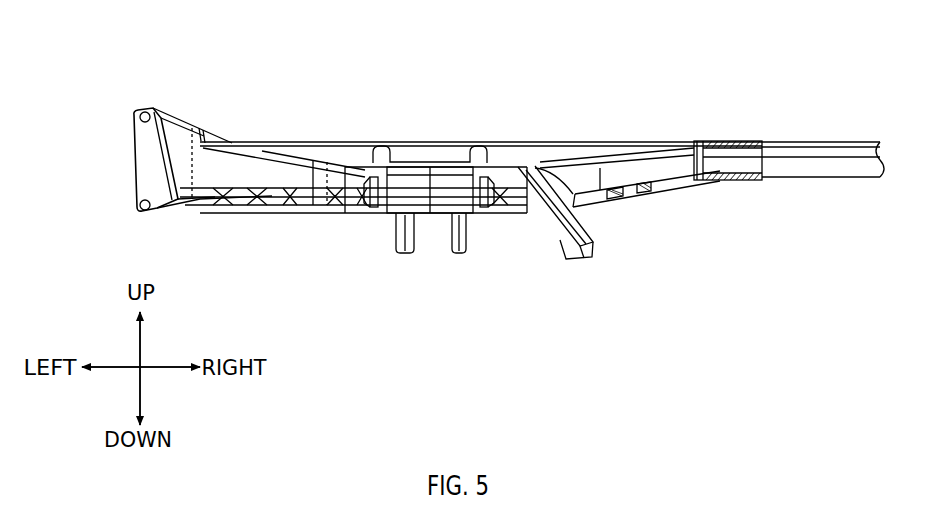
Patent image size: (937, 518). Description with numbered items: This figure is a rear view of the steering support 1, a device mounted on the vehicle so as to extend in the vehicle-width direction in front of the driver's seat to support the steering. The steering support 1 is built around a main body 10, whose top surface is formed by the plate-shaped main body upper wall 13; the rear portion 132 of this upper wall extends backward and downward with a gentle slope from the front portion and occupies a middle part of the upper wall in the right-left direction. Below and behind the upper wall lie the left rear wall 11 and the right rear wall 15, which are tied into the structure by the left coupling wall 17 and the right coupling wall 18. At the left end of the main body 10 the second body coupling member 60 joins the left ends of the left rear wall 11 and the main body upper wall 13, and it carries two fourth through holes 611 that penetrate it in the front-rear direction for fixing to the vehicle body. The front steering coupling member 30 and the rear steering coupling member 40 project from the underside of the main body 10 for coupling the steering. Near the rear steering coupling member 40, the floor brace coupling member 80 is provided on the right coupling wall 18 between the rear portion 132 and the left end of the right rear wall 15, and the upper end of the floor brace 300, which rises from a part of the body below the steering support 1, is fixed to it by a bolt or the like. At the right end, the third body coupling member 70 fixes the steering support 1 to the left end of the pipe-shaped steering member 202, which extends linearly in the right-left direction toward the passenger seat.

The steering support 1 is at (514, 41).
The main body 10 is at (591, 120).
The left rear wall 11 is at (227, 173).
The main body upper wall 13 is at (524, 146).
The rear portion 132 is at (446, 140).
The right rear wall 15 is at (673, 168).
The left coupling wall 17 is at (303, 153).
The right coupling wall 18 is at (597, 150).
The front steering coupling member 30 is at (419, 251).
The rear steering coupling member 40 is at (477, 179).
The second body coupling member 60 is at (127, 161).
The fourth through hole 611 is at (147, 112).
The third body coupling member 70 is at (742, 188).
The floor brace coupling member 80 is at (535, 243).
The steering member 202 is at (836, 143).
The floor brace 300 is at (578, 233).